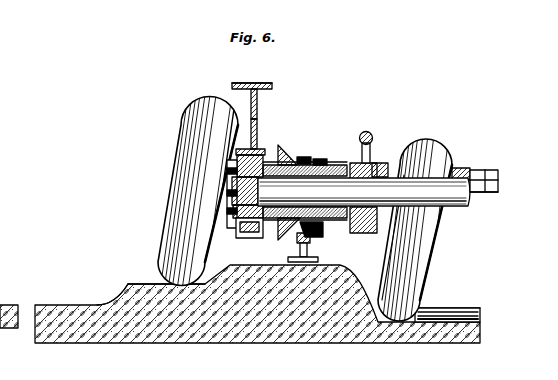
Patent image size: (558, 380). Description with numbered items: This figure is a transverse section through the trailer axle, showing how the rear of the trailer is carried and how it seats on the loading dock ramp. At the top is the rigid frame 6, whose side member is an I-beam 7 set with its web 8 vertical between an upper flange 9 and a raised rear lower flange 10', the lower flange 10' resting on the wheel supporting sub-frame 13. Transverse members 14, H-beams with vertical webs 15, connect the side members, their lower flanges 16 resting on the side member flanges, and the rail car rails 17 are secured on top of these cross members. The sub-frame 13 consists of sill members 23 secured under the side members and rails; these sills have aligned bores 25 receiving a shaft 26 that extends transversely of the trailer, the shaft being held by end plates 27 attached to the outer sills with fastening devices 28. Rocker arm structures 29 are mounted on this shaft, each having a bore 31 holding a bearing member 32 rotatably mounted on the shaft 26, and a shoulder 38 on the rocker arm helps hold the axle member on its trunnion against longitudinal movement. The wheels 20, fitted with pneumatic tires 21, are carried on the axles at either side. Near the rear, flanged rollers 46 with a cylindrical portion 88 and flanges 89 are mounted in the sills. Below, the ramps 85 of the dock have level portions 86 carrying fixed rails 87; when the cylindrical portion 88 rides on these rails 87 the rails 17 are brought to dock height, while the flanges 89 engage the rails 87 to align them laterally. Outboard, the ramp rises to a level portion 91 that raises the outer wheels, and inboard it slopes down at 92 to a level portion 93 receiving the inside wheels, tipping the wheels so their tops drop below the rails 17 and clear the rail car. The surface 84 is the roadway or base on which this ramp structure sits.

The frame 6 is at (272, 84).
The I-beam side members 7 is at (258, 104).
The web 8 is at (258, 120).
The upper flange 9 is at (247, 83).
The lower flange 10' is at (229, 145).
The sub-frame 13 is at (236, 158).
The transverse members 14 is at (498, 171).
The web 15 is at (498, 180).
The lower flange 16 is at (498, 190).
The rail car rails 17 is at (372, 138).
The wheels 20 is at (157, 258).
The pneumatic tires 21 is at (418, 230).
The sill members 23 is at (237, 234).
The bores 25 is at (228, 212).
The shaft 26 is at (470, 206).
The end plates 27 is at (228, 197).
The fastening devices 28 is at (228, 180).
The rocker arm structures 29 is at (330, 165).
The bore 31 is at (353, 236).
The bearing member 32 is at (266, 226).
The shoulder 38 is at (319, 160).
The flanged rollers 46 is at (334, 168).
The ground curb 84 is at (261, 306).
The ramps 85 is at (150, 283).
The level portions 86 is at (384, 266).
The rails 87 is at (312, 239).
The cylindrical portion 88 is at (303, 158).
The flanges 89 is at (278, 145).
The level portion 91 is at (123, 283).
The sloping portion 92 is at (457, 309).
The level portion 93 is at (477, 318).